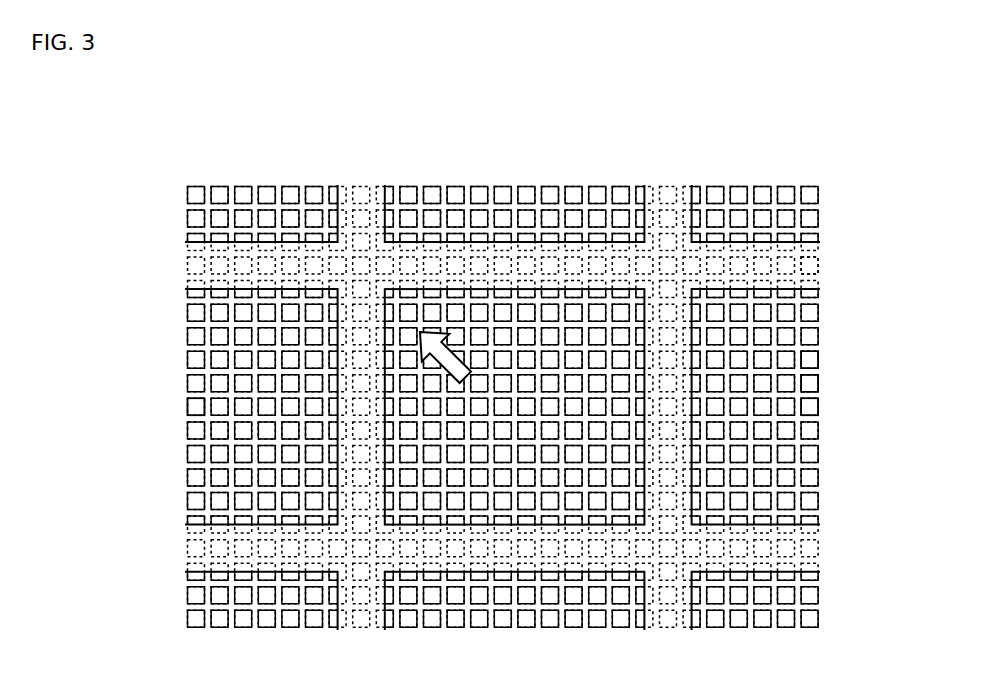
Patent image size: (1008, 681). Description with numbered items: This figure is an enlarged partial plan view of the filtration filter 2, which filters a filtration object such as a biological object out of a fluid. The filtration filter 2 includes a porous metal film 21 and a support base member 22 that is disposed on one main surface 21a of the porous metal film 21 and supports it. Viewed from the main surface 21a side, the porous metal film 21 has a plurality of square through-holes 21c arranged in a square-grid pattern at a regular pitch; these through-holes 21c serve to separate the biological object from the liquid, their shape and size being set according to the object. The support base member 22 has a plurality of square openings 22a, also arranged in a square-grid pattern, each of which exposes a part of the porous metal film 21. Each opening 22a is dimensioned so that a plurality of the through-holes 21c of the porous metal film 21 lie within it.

The filtration filter 2 is at (205, 150).
The porous metal film 21 is at (188, 405).
The main surface 21a is at (821, 418).
The through-holes 21c is at (818, 283).
The support base member 22 is at (517, 253).
The openings 22a is at (464, 316).